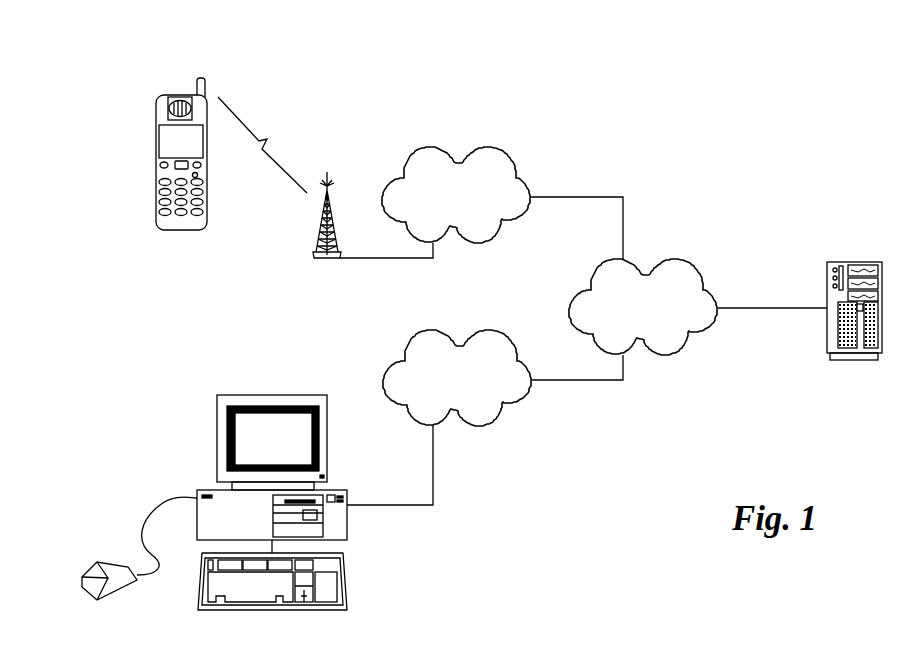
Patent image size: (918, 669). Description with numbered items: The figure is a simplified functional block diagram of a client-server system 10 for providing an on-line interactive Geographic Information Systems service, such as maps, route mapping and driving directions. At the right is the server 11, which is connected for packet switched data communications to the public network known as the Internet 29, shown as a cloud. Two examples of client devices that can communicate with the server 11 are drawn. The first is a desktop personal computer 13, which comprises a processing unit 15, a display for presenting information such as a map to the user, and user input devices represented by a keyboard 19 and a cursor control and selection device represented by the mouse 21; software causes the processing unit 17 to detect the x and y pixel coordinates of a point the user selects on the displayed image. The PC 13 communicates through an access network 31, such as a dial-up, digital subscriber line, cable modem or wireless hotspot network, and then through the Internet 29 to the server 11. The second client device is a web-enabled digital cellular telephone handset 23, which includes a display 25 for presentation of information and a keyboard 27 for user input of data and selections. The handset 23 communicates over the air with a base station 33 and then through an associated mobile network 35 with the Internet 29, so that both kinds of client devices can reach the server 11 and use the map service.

The system 10 is at (680, 155).
The server 11 is at (860, 262).
The personal computer 13 is at (155, 430).
The processing unit 15 is at (277, 393).
The processing unit 17 is at (337, 490).
The keyboard 19 is at (347, 582).
The mouse 21 is at (97, 563).
The digital cellular telephone handset 23 is at (182, 93).
The display 25 is at (162, 120).
The keyboard 27 is at (180, 217).
The Internet 29 is at (670, 260).
The access network 31 is at (477, 423).
The base station 33 is at (323, 208).
The mobile network 35 is at (482, 147).